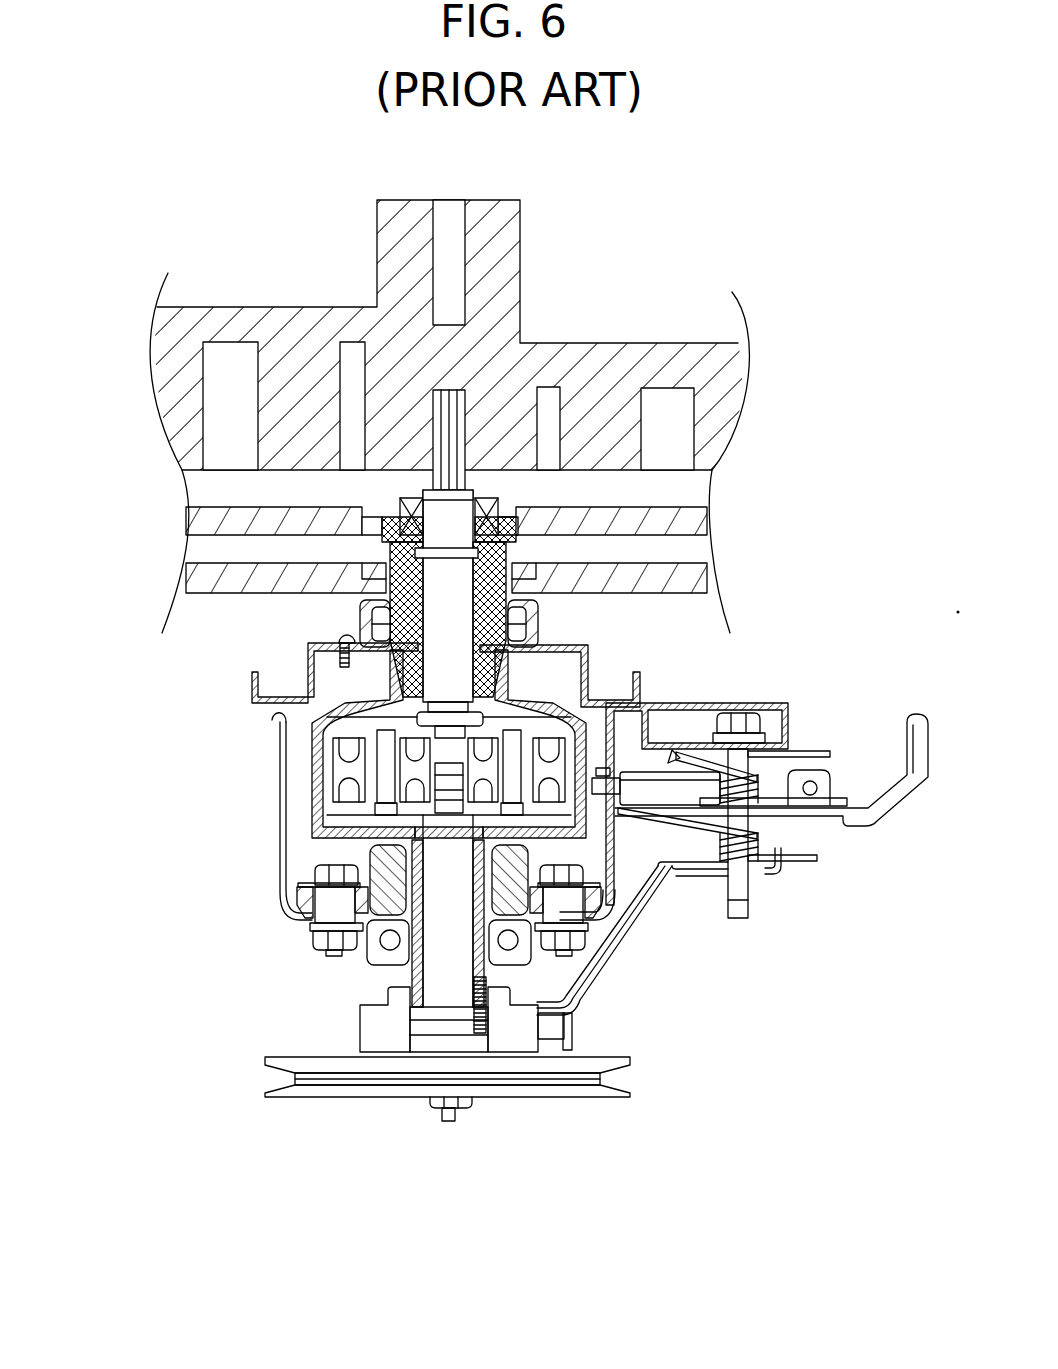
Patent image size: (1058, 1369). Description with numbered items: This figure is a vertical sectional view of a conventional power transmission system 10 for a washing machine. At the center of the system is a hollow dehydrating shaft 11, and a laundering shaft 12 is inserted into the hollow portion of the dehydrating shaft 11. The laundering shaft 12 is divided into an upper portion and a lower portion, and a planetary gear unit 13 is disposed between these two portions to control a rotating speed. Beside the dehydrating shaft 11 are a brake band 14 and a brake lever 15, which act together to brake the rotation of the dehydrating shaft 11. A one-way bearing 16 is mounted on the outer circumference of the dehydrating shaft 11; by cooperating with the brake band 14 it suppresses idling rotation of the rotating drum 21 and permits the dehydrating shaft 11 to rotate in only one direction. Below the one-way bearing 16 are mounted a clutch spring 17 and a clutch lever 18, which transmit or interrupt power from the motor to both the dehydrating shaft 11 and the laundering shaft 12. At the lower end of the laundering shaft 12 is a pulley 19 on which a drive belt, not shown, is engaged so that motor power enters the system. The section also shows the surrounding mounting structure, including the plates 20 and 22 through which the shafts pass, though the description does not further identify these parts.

The power transmission system 10 is at (160, 677).
The hollow dehydrating shaft 11 is at (318, 757).
The laundering shaft 12 is at (435, 520).
The planetary gear unit 13 is at (400, 843).
The brake band 14 is at (305, 803).
The brake lever 15 is at (650, 813).
The one-way bearing 16 is at (407, 890).
The clutch spring 17 is at (407, 983).
The clutch lever 18 is at (612, 957).
The pulley 19 is at (588, 1093).
The lower plate 20 is at (702, 585).
The rotating drum 21 is at (702, 527).
The engine block 22 is at (718, 407).